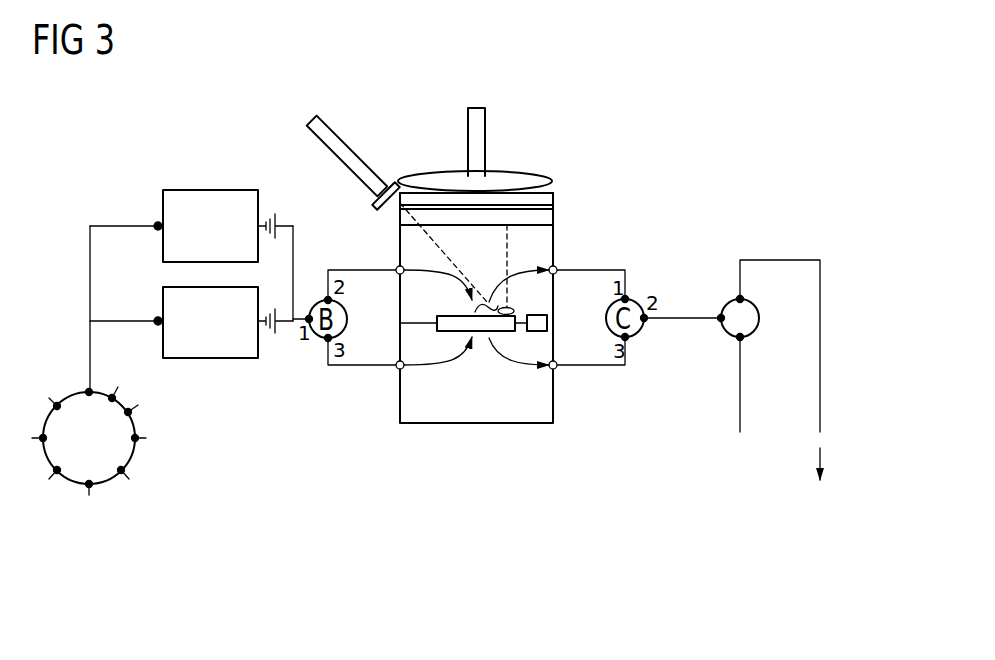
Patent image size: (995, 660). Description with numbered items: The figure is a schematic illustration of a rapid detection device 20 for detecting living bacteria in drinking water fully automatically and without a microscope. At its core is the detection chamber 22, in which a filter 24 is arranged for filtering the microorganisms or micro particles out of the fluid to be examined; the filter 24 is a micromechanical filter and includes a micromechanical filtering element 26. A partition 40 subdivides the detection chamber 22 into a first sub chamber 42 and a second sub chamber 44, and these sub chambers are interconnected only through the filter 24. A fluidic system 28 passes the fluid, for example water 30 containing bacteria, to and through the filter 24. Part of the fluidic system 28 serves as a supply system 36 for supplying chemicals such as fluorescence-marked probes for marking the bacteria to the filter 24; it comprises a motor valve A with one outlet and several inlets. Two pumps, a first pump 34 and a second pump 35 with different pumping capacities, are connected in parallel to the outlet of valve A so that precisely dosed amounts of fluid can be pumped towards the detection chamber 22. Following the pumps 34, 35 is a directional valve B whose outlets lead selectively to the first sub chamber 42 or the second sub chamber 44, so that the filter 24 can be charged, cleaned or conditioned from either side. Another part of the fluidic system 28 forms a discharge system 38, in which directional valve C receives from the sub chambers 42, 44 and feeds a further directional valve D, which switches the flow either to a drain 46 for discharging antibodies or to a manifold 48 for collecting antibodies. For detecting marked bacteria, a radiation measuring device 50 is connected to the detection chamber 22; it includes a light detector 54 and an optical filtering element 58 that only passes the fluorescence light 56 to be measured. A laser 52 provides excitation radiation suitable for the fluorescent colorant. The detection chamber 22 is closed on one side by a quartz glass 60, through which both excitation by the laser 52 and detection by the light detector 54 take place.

The detection device 20 is at (157, 165).
The detection chamber 22 is at (553, 400).
The filter 24 is at (508, 338).
The micromechanical filtering element 26 is at (483, 340).
The fluidic system 28 is at (135, 220).
The water 30 is at (100, 500).
The first pump 34 is at (240, 358).
The second pump 35 is at (210, 190).
The supply system 36 is at (165, 397).
The discharge system 38 is at (728, 380).
The partition 40 is at (418, 322).
The first sub chamber 42 is at (488, 258).
The second sub chamber 44 is at (445, 416).
The drain 46 is at (820, 413).
The manifold 48 is at (740, 393).
The radiation measuring device 50 is at (502, 112).
The laser 52 is at (345, 140).
The light detector 54 is at (532, 170).
The fluorescence light 56 is at (507, 245).
The optical filtering element 58 is at (553, 199).
The quartz glass 60 is at (553, 215).